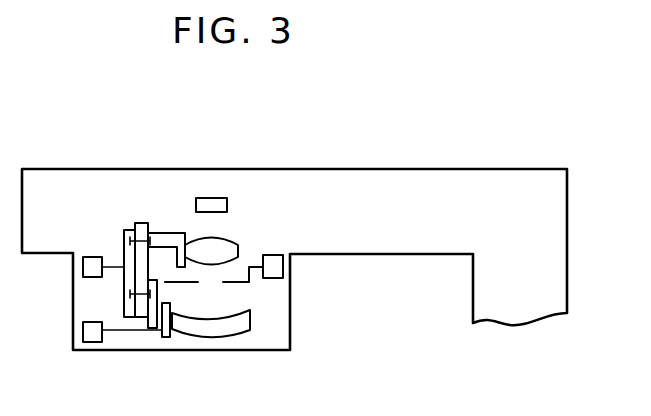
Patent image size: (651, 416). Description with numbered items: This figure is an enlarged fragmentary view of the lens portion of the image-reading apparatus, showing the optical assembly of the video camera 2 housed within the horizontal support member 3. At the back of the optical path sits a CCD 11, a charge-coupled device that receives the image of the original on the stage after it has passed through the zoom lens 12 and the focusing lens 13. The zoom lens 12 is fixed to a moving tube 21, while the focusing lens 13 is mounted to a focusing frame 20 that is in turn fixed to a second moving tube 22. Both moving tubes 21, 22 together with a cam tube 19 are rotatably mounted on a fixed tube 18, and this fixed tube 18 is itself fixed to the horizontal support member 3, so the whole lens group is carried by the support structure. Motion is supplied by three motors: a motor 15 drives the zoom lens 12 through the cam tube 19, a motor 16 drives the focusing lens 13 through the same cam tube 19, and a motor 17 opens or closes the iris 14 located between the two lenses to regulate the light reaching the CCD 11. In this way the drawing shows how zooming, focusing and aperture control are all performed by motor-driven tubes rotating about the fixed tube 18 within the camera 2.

The video camera 2 is at (205, 133).
The horizontal support member 3 is at (378, 169).
The CCD 11 is at (221, 198).
The zoom lens 12 is at (228, 248).
The focusing lens 13 is at (240, 332).
The iris 14 is at (242, 283).
The motor 15 is at (84, 270).
The motor 16 is at (83, 333).
The motor 17 is at (283, 268).
The fixed tube 18 is at (142, 223).
The cam tube 19 is at (128, 232).
The focusing frame 20 is at (167, 333).
The moving tube 21 is at (172, 233).
The moving tube 22 is at (152, 318).